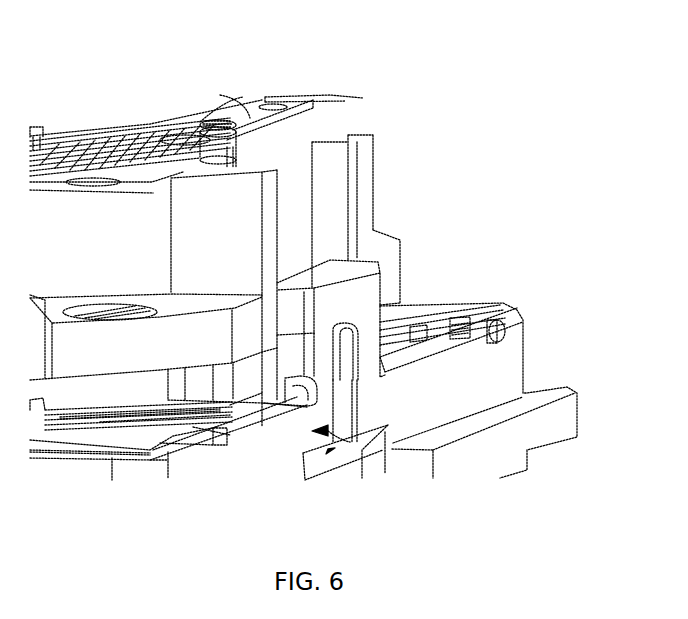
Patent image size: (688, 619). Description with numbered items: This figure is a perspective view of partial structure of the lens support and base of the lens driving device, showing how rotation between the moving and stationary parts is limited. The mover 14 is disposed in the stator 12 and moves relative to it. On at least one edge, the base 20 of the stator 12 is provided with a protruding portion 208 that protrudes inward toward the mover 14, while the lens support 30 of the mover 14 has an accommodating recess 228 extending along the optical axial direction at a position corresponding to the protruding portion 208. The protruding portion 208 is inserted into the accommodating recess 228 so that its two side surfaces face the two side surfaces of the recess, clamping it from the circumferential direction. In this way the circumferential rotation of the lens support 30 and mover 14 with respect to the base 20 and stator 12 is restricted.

The mover 14 is at (175, 113).
The lens support 30 is at (293, 133).
The accommodating recess 228 is at (322, 202).
The protruding portion 208 is at (334, 268).
The stator 12 is at (537, 352).
The base 20 is at (363, 455).